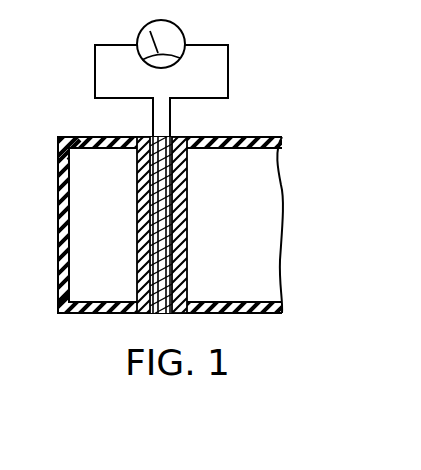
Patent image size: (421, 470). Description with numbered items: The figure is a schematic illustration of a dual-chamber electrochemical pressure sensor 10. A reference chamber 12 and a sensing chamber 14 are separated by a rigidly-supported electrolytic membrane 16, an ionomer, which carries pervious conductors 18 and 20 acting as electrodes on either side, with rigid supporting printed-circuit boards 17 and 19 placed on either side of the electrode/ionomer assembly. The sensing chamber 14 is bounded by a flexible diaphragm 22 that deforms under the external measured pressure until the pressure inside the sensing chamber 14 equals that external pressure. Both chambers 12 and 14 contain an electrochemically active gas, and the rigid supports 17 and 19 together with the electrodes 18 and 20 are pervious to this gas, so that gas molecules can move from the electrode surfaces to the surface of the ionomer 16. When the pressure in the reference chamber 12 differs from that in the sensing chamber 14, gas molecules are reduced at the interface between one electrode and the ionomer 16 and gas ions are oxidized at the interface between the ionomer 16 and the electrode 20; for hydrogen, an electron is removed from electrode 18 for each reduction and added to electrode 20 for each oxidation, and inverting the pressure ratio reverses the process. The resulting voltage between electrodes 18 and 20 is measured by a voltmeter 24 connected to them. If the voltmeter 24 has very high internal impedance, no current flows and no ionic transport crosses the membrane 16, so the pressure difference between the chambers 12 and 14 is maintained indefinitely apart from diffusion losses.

The dual-chamber pressure sensor 10 is at (268, 133).
The reference chamber 12 is at (114, 246).
The sensing chamber 14 is at (240, 245).
The electrolytic membrane 16 is at (158, 238).
The rigid supporting printed-circuit board 17 is at (143, 260).
The pervious conductor 18 is at (141, 173).
The rigid supporting printed-circuit board 19 is at (185, 266).
The pervious conductor 20 is at (186, 191).
The flexible diaphragm 22 is at (287, 193).
The voltmeter 24 is at (181, 27).